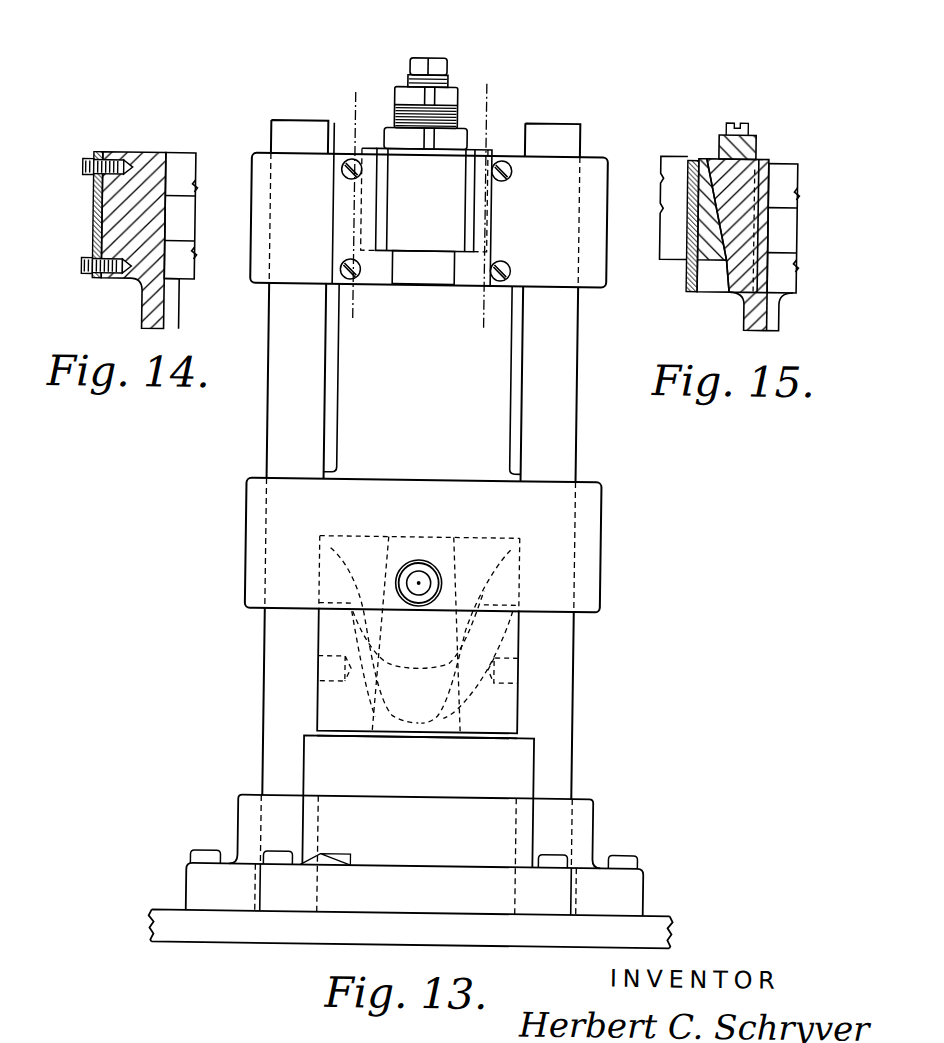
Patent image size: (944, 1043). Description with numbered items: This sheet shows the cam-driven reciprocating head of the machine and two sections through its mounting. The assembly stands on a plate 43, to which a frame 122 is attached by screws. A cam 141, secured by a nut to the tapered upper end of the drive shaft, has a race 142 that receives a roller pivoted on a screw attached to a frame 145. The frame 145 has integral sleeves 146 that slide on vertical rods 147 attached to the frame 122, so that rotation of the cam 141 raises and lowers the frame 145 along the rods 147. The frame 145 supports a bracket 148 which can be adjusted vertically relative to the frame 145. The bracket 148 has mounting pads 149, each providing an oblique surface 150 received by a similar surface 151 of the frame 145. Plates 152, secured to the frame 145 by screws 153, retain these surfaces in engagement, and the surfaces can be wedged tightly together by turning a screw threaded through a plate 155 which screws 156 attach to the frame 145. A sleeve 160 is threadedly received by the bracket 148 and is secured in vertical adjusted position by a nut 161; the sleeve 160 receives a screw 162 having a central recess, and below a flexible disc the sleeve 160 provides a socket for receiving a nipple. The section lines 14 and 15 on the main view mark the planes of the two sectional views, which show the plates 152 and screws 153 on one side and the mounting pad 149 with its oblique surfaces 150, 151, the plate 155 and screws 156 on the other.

In FIG. 13, the plate 43 is at (163, 911).
In FIG. 13, the frame 122 is at (597, 818).
In FIG. 13, the cam 141 is at (320, 702).
In FIG. 13, the race 142 is at (434, 722).
In FIG. 13, the frame 145 is at (336, 435).
In FIG. 14, the frame 145 is at (148, 156).
In FIG. 15, the frame 145 is at (743, 326).
In FIG. 13, the sleeves 146 is at (256, 150).
In FIG. 13, the vertical rods 147 is at (266, 397).
In FIG. 15, the bracket 148 is at (681, 153).
In FIG. 13, the mounting pads 149 is at (366, 146).
In FIG. 15, the mounting pads 149 is at (704, 153).
In FIG. 15, the oblique surface 150 is at (710, 290).
In FIG. 15, the oblique surface 151 is at (744, 157).
In FIG. 14, the plates 152 is at (89, 221).
In FIG. 15, the plates 152 is at (686, 270).
In FIG. 13, the screws 153 is at (340, 262).
In FIG. 14, the screws 153 is at (78, 171).
In FIG. 15, the plate 155 is at (751, 152).
In FIG. 15, the screws 156 is at (740, 118).
In FIG. 13, the sleeve 160 is at (452, 87).
In FIG. 13, the nut 161 is at (467, 128).
In FIG. 13, the screw 162 is at (430, 58).
In FIG. 13, the section line 14— 14 is at (354, 98).
In FIG. 13, the section line 15— 15 is at (485, 101).